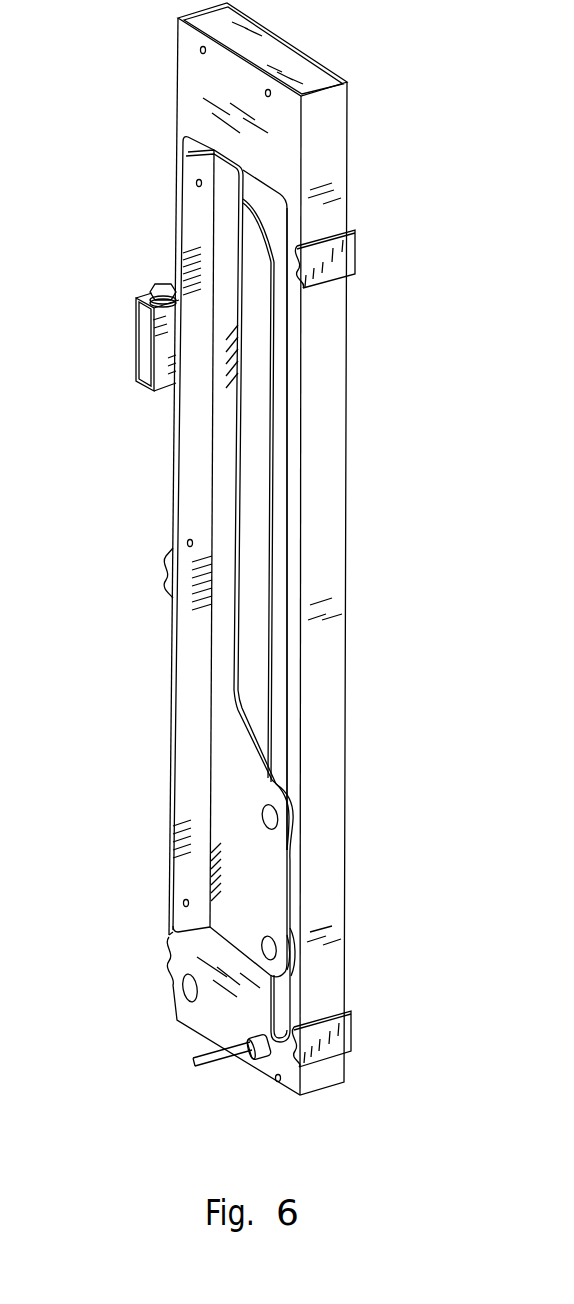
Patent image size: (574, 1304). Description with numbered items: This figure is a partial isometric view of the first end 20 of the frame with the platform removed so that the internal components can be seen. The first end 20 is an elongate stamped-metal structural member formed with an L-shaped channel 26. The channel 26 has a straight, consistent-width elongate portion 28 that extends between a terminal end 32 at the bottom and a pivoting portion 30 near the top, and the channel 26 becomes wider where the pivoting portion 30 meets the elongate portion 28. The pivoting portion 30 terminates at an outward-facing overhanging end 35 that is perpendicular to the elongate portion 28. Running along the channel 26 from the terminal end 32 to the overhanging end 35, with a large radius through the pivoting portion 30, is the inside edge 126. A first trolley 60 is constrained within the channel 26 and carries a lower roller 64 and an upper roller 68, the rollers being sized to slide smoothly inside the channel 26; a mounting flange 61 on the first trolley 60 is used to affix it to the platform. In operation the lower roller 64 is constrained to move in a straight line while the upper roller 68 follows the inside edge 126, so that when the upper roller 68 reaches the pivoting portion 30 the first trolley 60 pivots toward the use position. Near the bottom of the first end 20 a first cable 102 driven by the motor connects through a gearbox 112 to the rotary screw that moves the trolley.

The first end 20 is at (197, 76).
The overhanging end 35 is at (186, 147).
The inside edge 126 is at (263, 246).
The pivoting portion 30 is at (270, 198).
The channel 26 is at (295, 382).
The elongate portion 28 is at (288, 598).
The mounting flange 61 is at (192, 648).
The upper roller 68 is at (298, 803).
The first trolley 60 is at (256, 871).
The lower roller 64 is at (298, 963).
The terminal end 32 is at (272, 1012).
The first cable 102 is at (210, 1066).
The gearbox 112 is at (268, 1062).